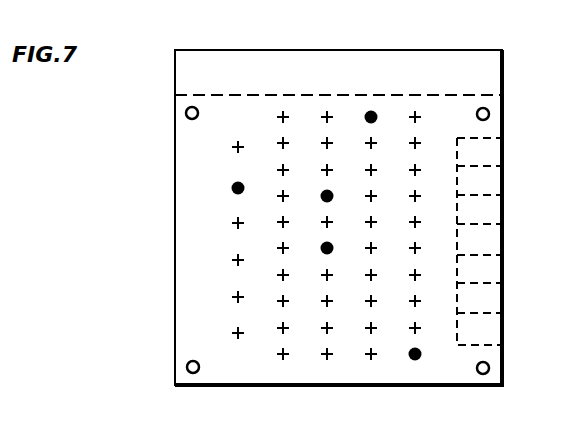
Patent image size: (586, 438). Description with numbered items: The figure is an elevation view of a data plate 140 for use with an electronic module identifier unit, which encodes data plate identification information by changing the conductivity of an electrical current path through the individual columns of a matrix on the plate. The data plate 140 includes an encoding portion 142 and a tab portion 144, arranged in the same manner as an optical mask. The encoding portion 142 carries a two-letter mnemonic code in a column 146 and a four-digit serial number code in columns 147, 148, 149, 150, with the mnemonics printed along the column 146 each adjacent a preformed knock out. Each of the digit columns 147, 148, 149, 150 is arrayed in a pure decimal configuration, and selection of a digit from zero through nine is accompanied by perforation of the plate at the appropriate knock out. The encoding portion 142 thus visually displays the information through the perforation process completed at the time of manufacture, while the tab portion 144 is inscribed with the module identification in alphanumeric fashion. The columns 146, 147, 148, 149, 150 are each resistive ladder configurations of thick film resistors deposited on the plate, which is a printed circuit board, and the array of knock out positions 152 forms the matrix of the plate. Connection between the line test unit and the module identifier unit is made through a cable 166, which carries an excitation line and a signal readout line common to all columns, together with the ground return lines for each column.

The data plate 140 is at (511, 63).
The encoding portion 142 is at (240, 362).
The tab portion 144 is at (203, 62).
The column 146 is at (233, 55).
The column 147 is at (285, 54).
The column 148 is at (327, 54).
The column 149 is at (370, 57).
The column 150 is at (417, 57).
The matrix of marking positions 152 is at (367, 333).
The cable 166 is at (411, 361).